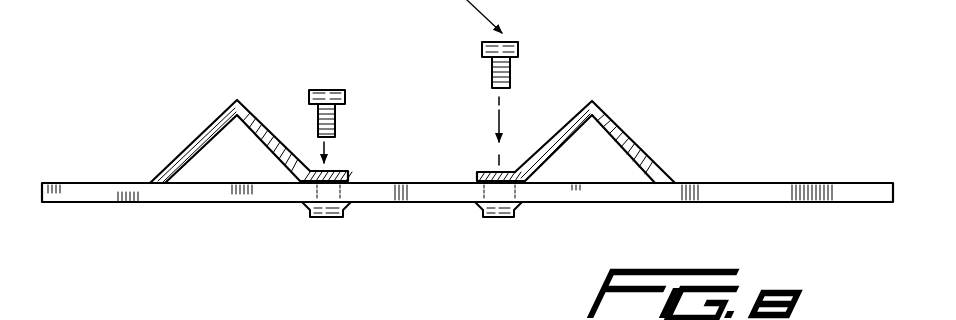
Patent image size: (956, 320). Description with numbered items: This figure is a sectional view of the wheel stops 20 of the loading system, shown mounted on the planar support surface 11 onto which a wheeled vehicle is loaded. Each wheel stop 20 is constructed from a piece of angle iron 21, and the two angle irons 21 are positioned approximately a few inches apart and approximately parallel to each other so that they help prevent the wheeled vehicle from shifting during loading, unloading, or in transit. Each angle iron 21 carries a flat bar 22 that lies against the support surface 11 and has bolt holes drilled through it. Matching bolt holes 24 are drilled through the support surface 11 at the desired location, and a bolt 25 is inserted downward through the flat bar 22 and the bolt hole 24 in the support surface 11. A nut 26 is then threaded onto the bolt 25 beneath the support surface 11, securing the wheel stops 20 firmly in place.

The support surface 11 is at (826, 208).
The wheel stops 20 is at (401, 96).
The angle iron 21 is at (219, 117).
The flat bar 22 is at (357, 168).
The bolt holes 24 is at (312, 188).
The bolt 25 is at (322, 82).
The nut 26 is at (320, 218).